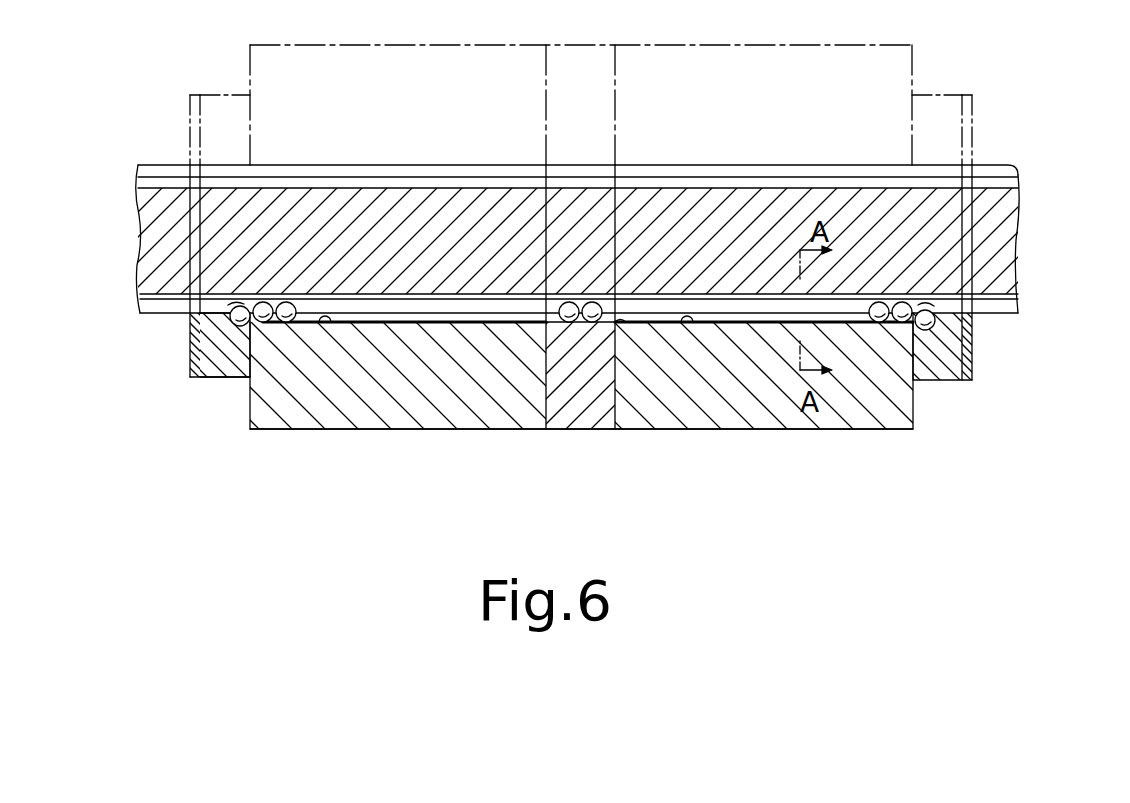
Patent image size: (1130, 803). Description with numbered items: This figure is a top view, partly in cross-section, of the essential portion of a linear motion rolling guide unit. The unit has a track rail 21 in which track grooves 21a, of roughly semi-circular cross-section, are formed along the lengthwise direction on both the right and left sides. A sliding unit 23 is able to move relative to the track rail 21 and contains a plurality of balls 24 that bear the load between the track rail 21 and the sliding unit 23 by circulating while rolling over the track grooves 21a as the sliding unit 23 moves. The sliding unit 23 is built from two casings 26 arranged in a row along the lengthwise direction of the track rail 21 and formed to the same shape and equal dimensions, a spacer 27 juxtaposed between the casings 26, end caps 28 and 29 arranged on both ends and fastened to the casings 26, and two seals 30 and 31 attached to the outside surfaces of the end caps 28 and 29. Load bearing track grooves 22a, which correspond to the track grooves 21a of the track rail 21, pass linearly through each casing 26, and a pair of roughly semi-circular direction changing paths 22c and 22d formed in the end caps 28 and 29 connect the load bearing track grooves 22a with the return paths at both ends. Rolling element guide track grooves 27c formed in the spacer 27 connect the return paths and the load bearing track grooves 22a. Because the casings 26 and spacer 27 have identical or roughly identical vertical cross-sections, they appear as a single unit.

The track rail 21 is at (1003, 166).
The track grooves 21a is at (148, 167).
The load bearing track grooves 22a is at (325, 324).
The direction changing path 22c is at (235, 306).
The direction changing path 22d is at (935, 305).
The sliding unit 23 is at (899, 450).
The balls 24 is at (258, 323).
The casings 26 is at (393, 412).
The spacer 27 is at (570, 420).
The rolling element guide track grooves 27c is at (626, 324).
The end cap 28 is at (212, 365).
The end cap 29 is at (937, 372).
The seal 30 is at (197, 374).
The seal 31 is at (968, 383).